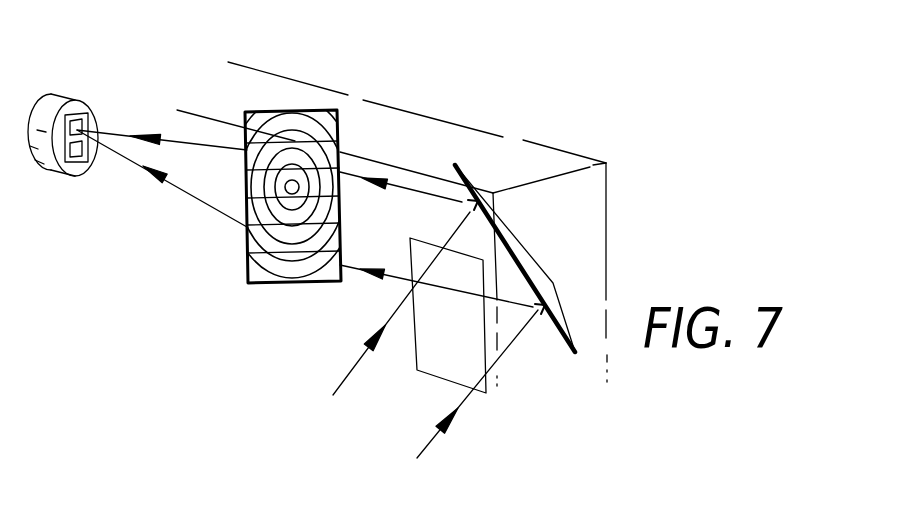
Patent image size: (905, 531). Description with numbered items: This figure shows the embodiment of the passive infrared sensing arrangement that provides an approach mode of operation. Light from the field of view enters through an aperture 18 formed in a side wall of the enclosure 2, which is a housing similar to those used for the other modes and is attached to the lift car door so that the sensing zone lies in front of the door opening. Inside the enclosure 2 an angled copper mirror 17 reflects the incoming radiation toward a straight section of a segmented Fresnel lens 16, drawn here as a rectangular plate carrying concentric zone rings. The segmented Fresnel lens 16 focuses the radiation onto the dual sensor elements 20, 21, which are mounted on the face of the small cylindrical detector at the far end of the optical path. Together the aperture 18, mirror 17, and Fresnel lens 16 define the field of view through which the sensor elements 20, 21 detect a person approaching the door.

The enclosure 2 is at (500, 137).
The segmented Fresnel lens 16 is at (228, 258).
The angled copper mirror 17 is at (533, 275).
The aperture 18 is at (448, 348).
The dual sensor element 20 is at (90, 107).
The dual sensor element 21 is at (64, 173).